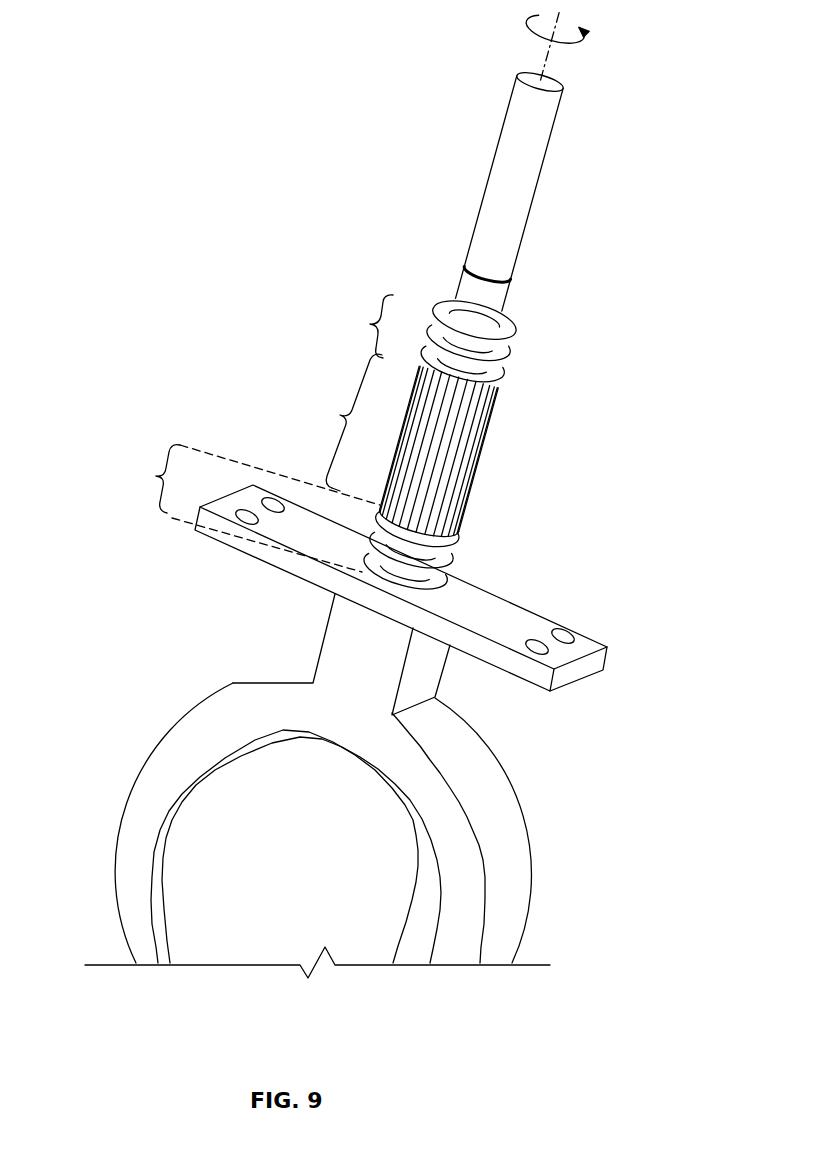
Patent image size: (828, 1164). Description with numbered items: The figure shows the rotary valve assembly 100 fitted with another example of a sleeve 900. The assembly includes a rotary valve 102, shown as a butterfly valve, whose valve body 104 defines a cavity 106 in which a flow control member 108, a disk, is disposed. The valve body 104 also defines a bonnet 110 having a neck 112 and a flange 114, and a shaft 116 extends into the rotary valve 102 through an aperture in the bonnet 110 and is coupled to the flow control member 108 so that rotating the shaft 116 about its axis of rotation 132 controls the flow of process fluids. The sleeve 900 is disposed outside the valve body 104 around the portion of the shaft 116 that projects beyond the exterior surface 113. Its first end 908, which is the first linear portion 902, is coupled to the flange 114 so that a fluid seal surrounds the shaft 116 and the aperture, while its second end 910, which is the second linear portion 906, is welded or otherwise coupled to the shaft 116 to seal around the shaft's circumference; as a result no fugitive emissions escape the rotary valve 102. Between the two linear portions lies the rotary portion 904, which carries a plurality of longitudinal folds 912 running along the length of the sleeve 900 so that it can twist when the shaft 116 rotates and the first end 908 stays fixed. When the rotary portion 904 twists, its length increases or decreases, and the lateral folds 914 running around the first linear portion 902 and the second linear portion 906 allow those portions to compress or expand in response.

The rotary valve assembly 100 is at (250, 197).
The rotary valve 102 is at (183, 597).
The valve body 104 is at (211, 712).
The cavity 106 is at (413, 943).
The flow control member 108 is at (367, 850).
The bonnet 110 is at (352, 657).
The neck 112 is at (420, 660).
The exterior surface 113 is at (508, 615).
The flange 114 is at (578, 664).
The shaft 116 is at (511, 134).
The axis of rotation 132 is at (553, 48).
The sleeve 900 is at (593, 197).
The first linear portion 902 is at (241, 508).
The rotary portion 904 is at (331, 422).
The second linear portion 906 is at (351, 326).
The first end 908 is at (363, 578).
The second end 910 is at (487, 327).
The longitudinal folds 912 is at (460, 470).
The lateral folds 914 is at (503, 360).